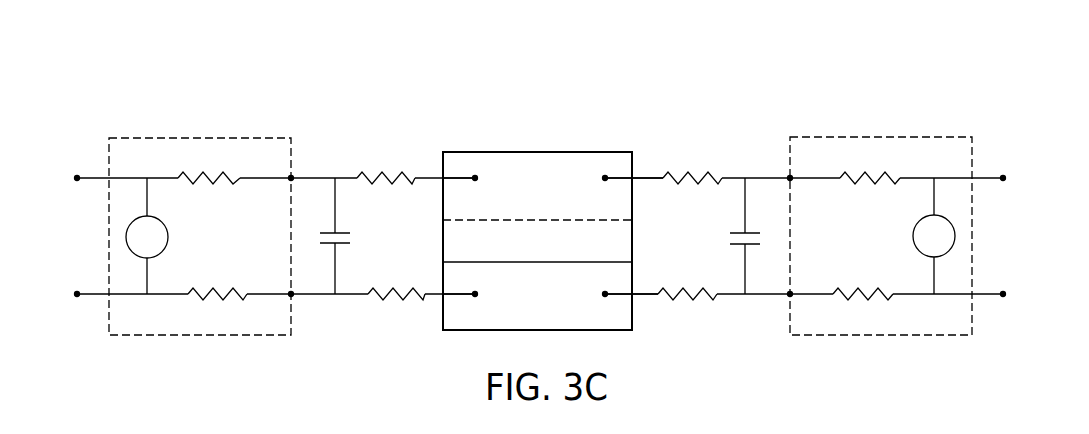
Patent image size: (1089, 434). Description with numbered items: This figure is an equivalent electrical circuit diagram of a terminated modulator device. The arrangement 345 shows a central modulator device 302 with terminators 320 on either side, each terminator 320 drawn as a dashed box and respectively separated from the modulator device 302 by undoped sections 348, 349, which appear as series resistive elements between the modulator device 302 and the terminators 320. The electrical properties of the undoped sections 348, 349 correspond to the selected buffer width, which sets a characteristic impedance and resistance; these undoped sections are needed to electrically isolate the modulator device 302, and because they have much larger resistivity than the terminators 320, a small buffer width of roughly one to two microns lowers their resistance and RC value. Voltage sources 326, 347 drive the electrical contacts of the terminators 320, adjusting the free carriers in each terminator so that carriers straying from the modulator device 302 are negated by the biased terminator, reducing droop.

The modulator device 302 is at (560, 140).
The terminators 320 is at (242, 125).
The voltage source 326 is at (168, 237).
The arrangement 345 is at (942, 63).
The voltage source 347 is at (913, 236).
The undoped section 348 is at (377, 163).
The undoped section 349 is at (698, 163).